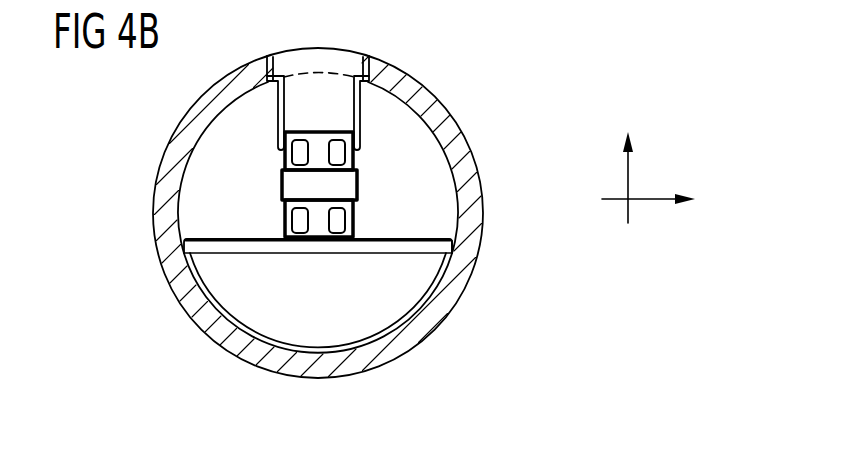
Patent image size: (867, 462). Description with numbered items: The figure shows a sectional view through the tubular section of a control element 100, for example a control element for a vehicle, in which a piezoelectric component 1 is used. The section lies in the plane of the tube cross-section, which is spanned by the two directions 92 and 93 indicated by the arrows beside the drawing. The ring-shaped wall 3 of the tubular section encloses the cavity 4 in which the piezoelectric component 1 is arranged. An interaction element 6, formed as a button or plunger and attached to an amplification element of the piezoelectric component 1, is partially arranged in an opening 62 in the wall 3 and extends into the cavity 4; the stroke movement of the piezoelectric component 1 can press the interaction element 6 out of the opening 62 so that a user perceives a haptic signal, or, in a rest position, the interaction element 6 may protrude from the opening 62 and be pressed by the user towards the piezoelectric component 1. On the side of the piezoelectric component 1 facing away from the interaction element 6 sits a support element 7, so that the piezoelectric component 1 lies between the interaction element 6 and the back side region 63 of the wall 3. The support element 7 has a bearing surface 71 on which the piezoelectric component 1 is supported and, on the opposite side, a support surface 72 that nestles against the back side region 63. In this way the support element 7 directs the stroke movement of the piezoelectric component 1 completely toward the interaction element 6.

The control element 100 is at (496, 82).
The wall 3 is at (176, 164).
The cavity 4 is at (185, 207).
The opening 62 is at (374, 69).
The back side region 63 is at (358, 362).
The interaction element 6 is at (348, 120).
The piezoelectric component 1 is at (344, 186).
The support element 7 is at (247, 264).
The bearing surface 71 is at (415, 236).
The support surface 72 is at (223, 324).
The direction 92 is at (628, 173).
The direction 93 is at (659, 200).